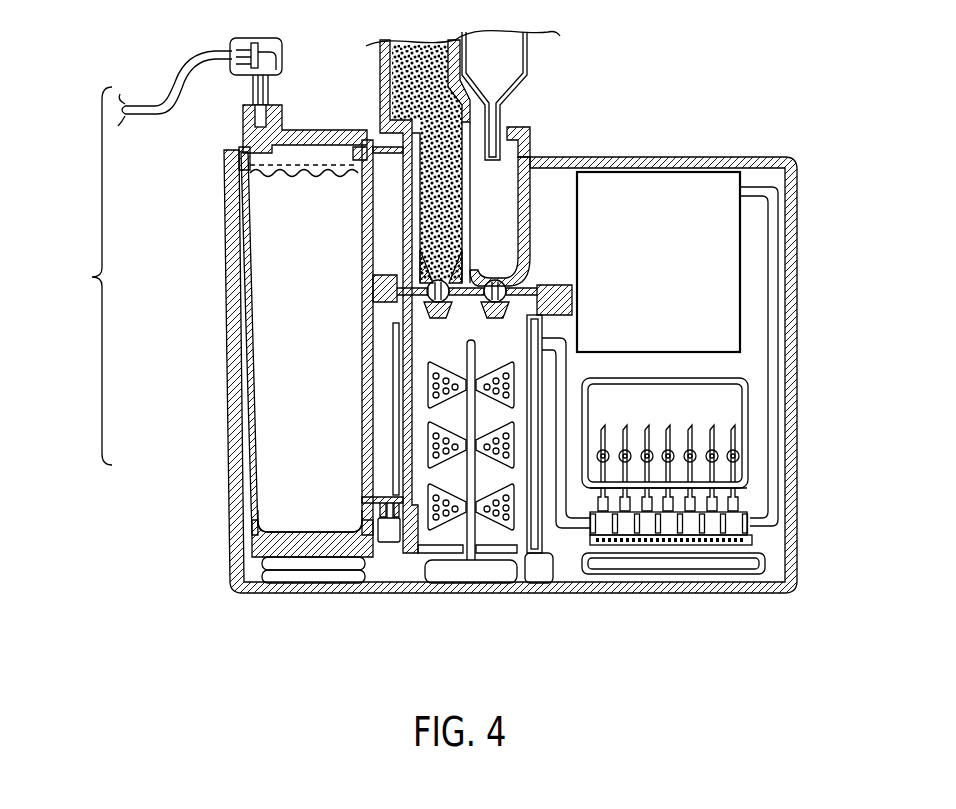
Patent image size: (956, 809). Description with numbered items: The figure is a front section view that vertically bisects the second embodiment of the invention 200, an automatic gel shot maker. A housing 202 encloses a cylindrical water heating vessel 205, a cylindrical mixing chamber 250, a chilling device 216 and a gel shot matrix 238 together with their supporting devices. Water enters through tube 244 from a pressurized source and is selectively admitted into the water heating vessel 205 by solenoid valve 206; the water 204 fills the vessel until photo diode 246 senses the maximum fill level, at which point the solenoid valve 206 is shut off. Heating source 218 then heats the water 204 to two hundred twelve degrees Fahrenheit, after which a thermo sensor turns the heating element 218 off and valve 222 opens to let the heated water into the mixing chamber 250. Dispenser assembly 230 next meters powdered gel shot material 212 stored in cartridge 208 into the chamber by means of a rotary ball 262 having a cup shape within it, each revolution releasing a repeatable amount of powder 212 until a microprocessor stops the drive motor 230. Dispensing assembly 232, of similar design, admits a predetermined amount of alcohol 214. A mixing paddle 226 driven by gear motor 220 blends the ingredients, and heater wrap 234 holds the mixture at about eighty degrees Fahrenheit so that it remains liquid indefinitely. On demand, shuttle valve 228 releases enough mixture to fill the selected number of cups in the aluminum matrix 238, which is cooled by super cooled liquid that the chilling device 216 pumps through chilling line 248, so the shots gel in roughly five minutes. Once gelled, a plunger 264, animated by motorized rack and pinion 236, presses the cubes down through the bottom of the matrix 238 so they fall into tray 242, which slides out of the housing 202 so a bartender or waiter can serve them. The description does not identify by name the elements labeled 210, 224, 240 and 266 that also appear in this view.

The second embodiment of the invention 200 is at (86, 276).
The housing 202 is at (236, 354).
The water 204 is at (257, 267).
The water heating vessel 205 is at (267, 507).
The solenoid valve 206 is at (273, 50).
The cartridge 208 is at (387, 95).
The inlet nozzle 210 is at (528, 72).
The powdered gel shot material 212 is at (400, 60).
The alcohol 214 is at (503, 187).
The chilling device 216 is at (638, 186).
The heating source 218 is at (274, 580).
The gear motor 220 is at (450, 575).
The valve 222 is at (390, 542).
The seal 224 is at (365, 505).
The mixing paddle 226 is at (488, 518).
The shuttle valve 228 is at (553, 563).
The dispenser assembly 230 is at (377, 293).
The dispensing assembly 232 is at (478, 310).
The heater wrap 234 is at (377, 418).
The motorized rack and pinion 236 is at (733, 433).
The gel shot matrix 238 is at (737, 527).
The bottom plate 240 is at (753, 540).
The tray 242 is at (731, 562).
The tube 244 is at (177, 75).
The photo diode 246 is at (227, 177).
The chilling line 248 is at (577, 527).
The mixing chamber 250 is at (560, 327).
The rotary ball 262 is at (433, 280).
The plunger 264 is at (733, 500).
The right conduit 266 is at (772, 352).